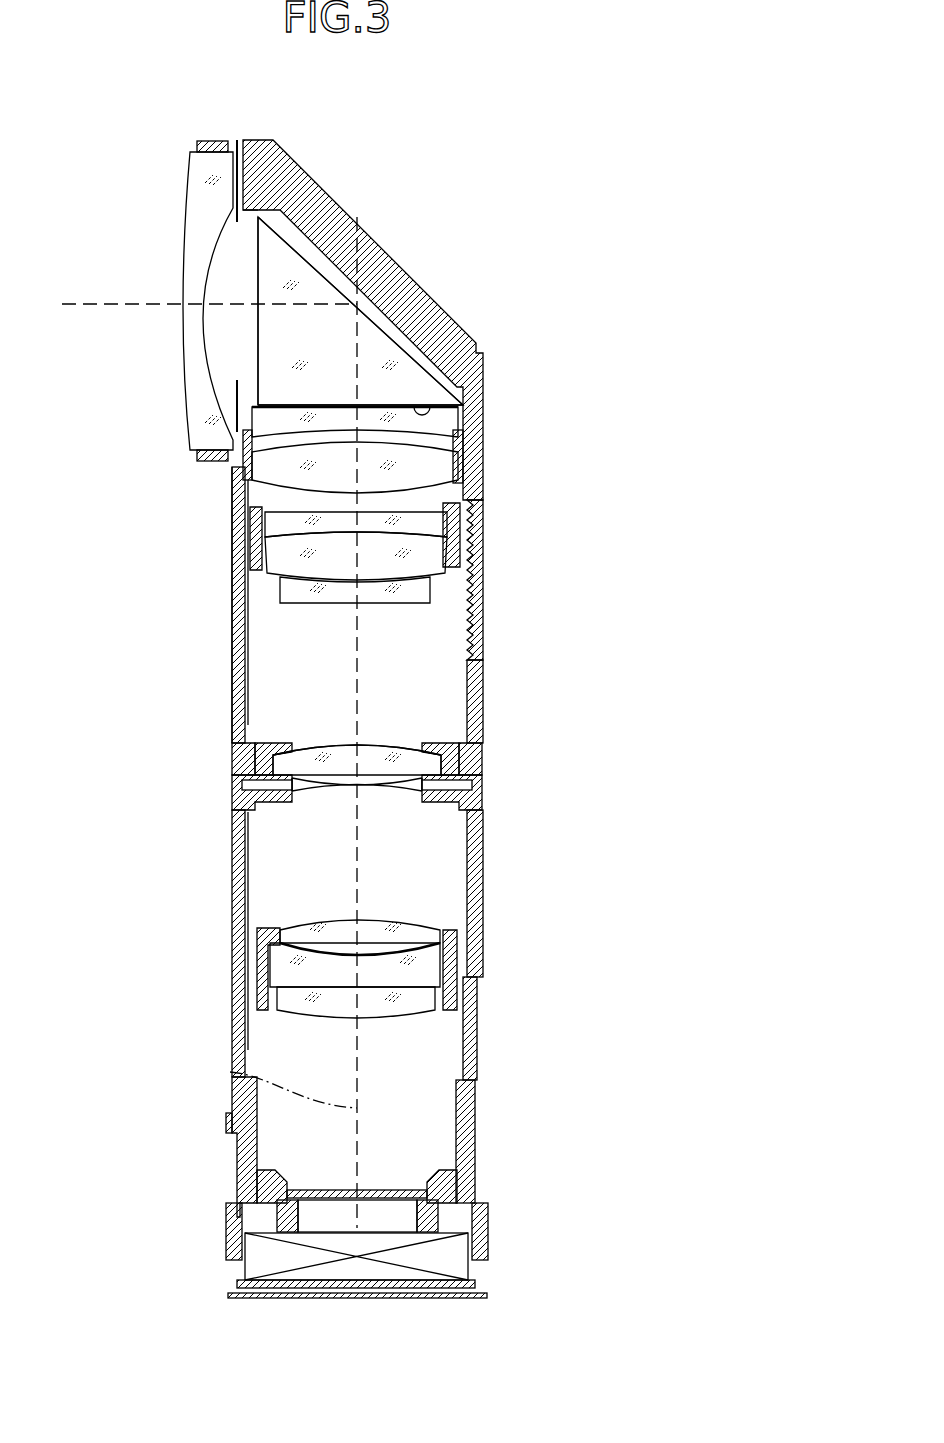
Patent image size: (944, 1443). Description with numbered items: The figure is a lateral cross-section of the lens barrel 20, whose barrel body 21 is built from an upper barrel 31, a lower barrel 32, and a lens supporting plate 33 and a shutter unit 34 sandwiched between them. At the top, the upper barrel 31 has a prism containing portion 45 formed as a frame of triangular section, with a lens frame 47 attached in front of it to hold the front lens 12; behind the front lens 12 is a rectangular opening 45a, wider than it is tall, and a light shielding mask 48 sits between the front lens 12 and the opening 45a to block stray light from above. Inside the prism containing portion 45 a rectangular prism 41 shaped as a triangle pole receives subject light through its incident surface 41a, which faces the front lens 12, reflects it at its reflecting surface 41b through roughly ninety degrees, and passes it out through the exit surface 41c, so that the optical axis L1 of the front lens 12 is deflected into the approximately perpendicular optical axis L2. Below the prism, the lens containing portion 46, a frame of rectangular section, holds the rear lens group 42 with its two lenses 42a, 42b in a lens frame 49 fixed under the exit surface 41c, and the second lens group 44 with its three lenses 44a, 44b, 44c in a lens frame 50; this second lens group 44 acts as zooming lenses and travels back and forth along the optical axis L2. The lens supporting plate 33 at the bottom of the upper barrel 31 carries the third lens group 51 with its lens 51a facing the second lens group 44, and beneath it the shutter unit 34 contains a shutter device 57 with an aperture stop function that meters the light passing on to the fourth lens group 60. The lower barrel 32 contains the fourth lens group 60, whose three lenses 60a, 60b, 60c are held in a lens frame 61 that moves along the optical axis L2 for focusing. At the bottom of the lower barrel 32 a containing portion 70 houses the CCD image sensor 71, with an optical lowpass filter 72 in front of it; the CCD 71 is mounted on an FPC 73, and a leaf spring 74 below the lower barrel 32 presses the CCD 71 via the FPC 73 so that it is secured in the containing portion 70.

The lens barrel 20 is at (477, 105).
The barrel body 21 is at (498, 368).
The front lens 12 is at (192, 382).
The lens frame 47 is at (213, 140).
The light shielding mask 48 is at (240, 205).
The lens frame 49 is at (225, 477).
The prism containing portion 45 is at (335, 232).
The opening 45a is at (240, 222).
The rectangular prism 41 is at (372, 300).
The incident surface 41a is at (258, 247).
The reflecting surface 41b is at (362, 250).
The exit surface 41c is at (437, 405).
The rear lens group 42 is at (424, 439).
The lens 42a is at (452, 412).
The lens 42b is at (405, 466).
The second lens group 44 is at (449, 562).
The lens 44a is at (448, 530).
The lens 44b is at (445, 555).
The lens 44c is at (430, 592).
The lens containing portion 46 is at (232, 625).
The lens frame 50 is at (230, 545).
The upper barrel 31 is at (230, 677).
The lower barrel 32 is at (231, 997).
The lens supporting plate 33 is at (230, 763).
The shutter unit 34 is at (485, 790).
The third lens group 51 is at (390, 738).
The lens 51a is at (332, 747).
The shutter device 57 is at (371, 792).
The lens frame 61 is at (268, 925).
The fourth lens group 60 is at (448, 935).
The lens 60a is at (445, 938).
The lens 60b is at (445, 968).
The lens 60c is at (430, 1013).
The containing portion 70 is at (334, 1248).
The CCD image sensor 71 is at (242, 1270).
The optical lowpass filter 72 is at (332, 1190).
The FPC 73 is at (240, 1285).
The leaf spring 74 is at (323, 1299).
The optical axis L1 is at (92, 304).
The optical axis L2 is at (230, 1072).